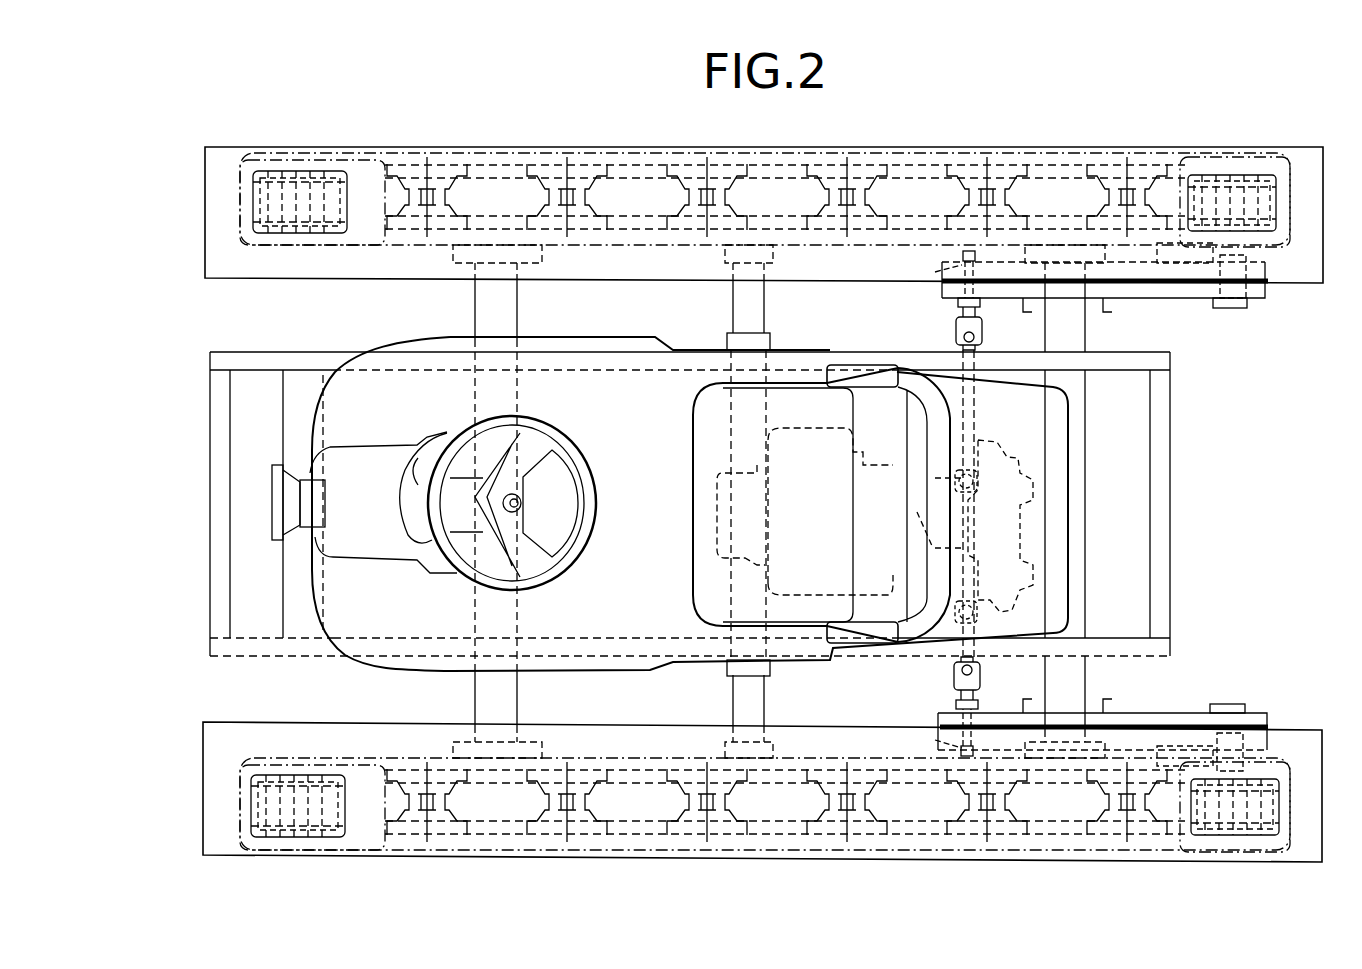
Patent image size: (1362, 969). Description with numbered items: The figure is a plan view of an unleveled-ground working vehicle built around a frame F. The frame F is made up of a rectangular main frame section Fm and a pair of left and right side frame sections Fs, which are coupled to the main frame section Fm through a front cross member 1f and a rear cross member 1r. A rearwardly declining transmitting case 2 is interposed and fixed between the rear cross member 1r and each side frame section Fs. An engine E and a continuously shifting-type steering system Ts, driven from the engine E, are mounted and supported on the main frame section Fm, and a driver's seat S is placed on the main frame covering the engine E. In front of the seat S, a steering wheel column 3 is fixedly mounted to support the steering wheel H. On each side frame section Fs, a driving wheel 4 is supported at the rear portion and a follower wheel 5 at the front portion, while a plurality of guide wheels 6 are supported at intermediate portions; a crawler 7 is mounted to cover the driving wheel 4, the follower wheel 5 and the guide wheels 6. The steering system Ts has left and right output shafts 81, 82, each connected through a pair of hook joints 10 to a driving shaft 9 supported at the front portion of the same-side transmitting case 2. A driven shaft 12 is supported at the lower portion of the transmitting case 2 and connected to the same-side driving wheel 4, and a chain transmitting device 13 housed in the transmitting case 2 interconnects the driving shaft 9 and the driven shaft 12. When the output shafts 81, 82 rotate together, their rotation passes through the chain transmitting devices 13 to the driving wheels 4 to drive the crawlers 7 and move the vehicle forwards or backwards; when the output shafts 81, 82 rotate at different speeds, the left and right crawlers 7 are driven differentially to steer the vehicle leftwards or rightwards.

The crawler 7 is at (243, 170).
The follower wheel 5 is at (282, 160).
The guide wheels 6 is at (602, 172).
The driving wheel 4 is at (1203, 178).
The frame F is at (212, 348).
The main frame section Fm is at (277, 353).
The side frame sections Fs is at (637, 222).
The front cross member 1f is at (477, 304).
The rear cross member 1r is at (1085, 318).
The driving shaft 9 is at (935, 272).
The hook joints 10 is at (956, 337).
The driven shaft 12 is at (1270, 283).
The transmitting case 2 is at (1250, 300).
The chain transmitting device 13 is at (1186, 296).
The steering wheel column 3 is at (412, 460).
The engine E is at (715, 470).
The continuously shifting-type steering system Ts is at (1020, 457).
The right output shaft 82 is at (955, 491).
The left output shaft 81 is at (947, 610).
The driver's seat S is at (713, 572).
The steering wheel H is at (550, 575).